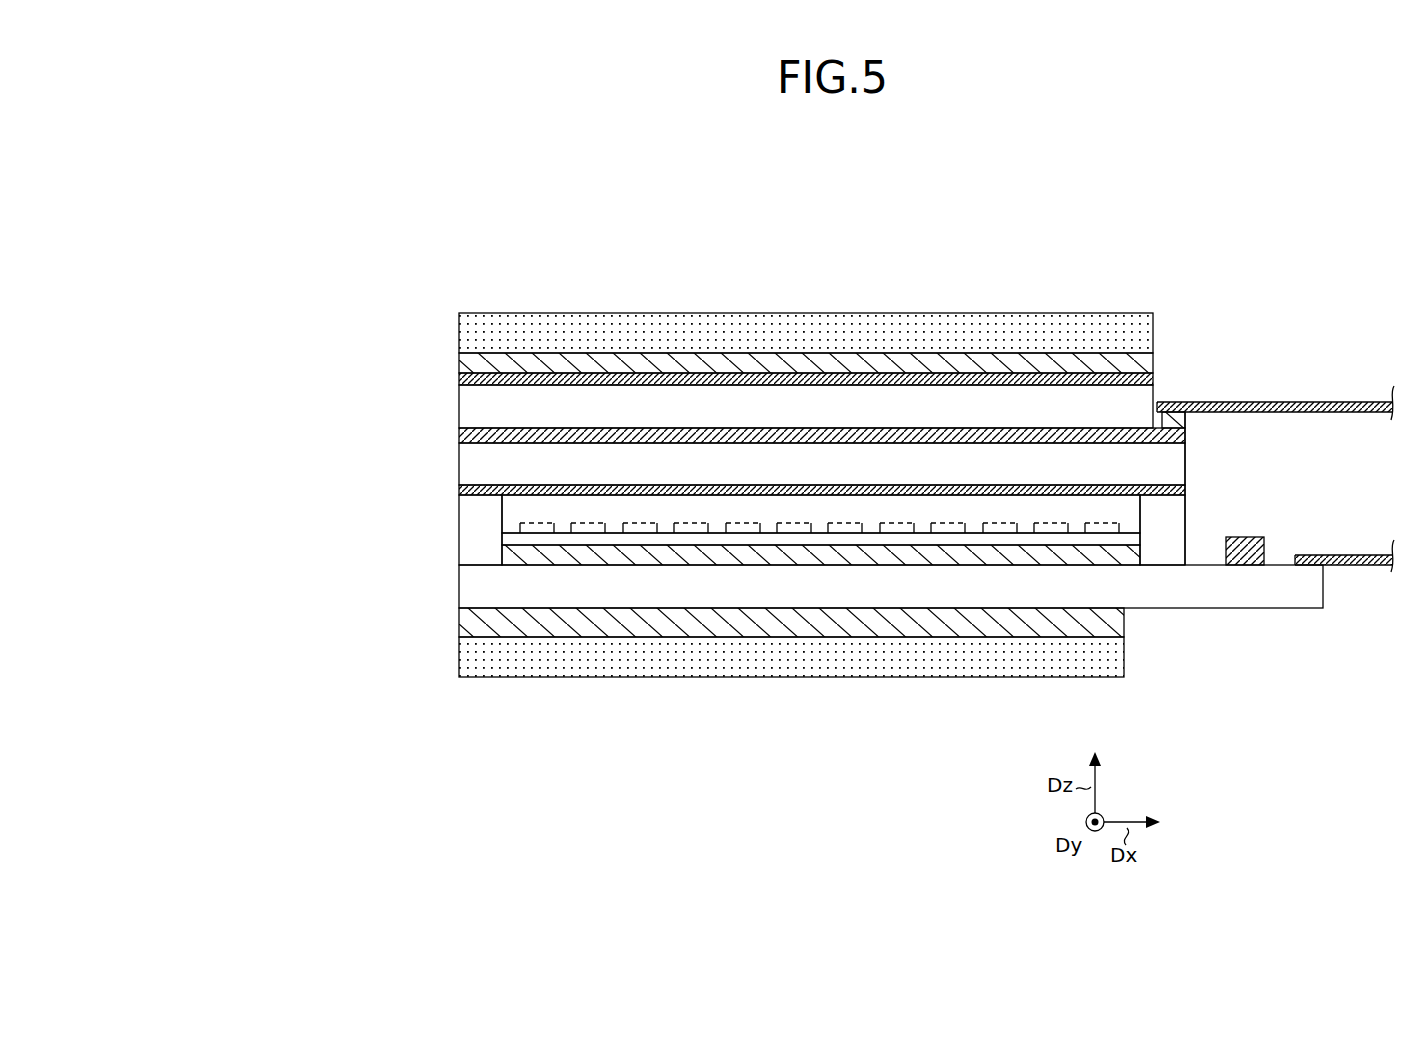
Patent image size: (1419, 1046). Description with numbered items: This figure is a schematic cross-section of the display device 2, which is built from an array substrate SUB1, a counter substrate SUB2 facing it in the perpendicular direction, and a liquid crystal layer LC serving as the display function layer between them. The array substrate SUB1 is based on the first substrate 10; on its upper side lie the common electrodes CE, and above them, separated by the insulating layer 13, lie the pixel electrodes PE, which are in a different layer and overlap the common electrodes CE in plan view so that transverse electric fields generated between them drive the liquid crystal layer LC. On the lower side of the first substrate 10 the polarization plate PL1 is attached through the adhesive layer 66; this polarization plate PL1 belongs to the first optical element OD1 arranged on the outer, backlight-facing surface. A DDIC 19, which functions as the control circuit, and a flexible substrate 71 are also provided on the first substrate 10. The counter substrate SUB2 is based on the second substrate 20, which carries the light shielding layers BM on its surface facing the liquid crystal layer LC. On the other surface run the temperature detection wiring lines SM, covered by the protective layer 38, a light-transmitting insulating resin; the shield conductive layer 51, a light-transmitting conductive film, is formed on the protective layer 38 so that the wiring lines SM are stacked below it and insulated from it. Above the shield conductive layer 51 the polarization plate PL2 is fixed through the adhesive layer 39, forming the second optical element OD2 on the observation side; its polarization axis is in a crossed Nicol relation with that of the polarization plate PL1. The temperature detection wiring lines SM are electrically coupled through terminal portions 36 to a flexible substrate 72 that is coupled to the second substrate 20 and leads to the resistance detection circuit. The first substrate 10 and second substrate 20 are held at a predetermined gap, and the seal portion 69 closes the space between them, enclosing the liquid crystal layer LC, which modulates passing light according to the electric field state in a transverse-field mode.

The display device 2 is at (1222, 252).
The counter substrate SUB2 is at (243, 208).
The second optical element OD2 is at (305, 208).
The polarization plate PL2 is at (459, 333).
The adhesive layer 39 is at (459, 360).
The shield conductive layer 51 is at (459, 378).
The protective layer 38 is at (497, 413).
The temperature detection wiring lines SM is at (459, 435).
The second substrate 20 is at (470, 463).
The light shielding layers BM is at (459, 490).
The insulating layer 13 is at (1178, 536).
The liquid crystal layer LC is at (511, 510).
The pixel electrodes PE is at (502, 530).
The seal portion 69 is at (1132, 543).
The array substrate SUB1 is at (307, 543).
The common electrodes CE is at (517, 557).
The first substrate 10 is at (459, 588).
The first optical element OD1 is at (307, 670).
The adhesive layer 66 is at (459, 623).
The polarization plate PL1 is at (459, 657).
The terminal portions 36 is at (1205, 402).
The flexible substrate 72 is at (1355, 402).
The DDIC 19 is at (1262, 550).
The flexible substrate 71 is at (1360, 555).